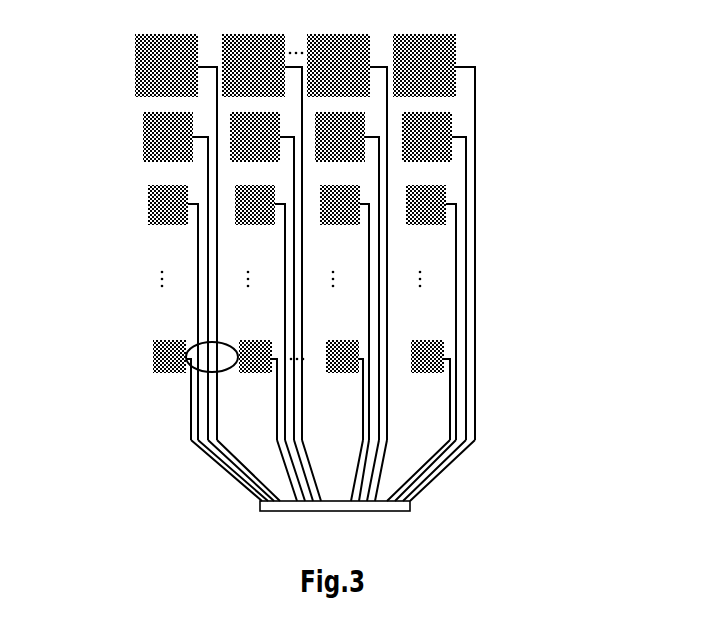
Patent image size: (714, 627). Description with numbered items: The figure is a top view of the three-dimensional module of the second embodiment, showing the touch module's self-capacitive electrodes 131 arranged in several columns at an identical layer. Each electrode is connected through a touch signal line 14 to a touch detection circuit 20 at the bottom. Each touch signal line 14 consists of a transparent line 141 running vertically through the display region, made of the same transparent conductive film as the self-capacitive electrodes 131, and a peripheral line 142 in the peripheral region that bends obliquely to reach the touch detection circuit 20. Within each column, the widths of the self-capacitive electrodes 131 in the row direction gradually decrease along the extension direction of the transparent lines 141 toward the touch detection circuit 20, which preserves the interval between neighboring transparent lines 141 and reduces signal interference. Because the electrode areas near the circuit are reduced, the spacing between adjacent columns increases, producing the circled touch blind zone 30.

The self-capacitive electrode 131 is at (140, 63).
The touch blind zone 30 is at (193, 345).
The touch signal line 14 is at (401, 284).
The transparent line 141 is at (477, 347).
The peripheral line 142 is at (369, 470).
The touch detection circuit 20 is at (262, 509).